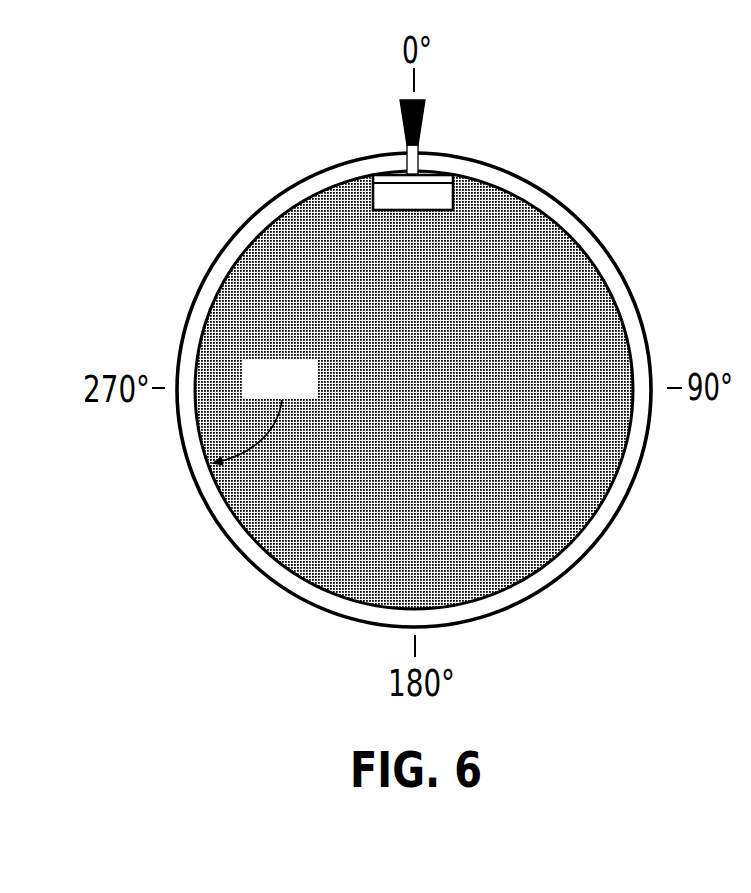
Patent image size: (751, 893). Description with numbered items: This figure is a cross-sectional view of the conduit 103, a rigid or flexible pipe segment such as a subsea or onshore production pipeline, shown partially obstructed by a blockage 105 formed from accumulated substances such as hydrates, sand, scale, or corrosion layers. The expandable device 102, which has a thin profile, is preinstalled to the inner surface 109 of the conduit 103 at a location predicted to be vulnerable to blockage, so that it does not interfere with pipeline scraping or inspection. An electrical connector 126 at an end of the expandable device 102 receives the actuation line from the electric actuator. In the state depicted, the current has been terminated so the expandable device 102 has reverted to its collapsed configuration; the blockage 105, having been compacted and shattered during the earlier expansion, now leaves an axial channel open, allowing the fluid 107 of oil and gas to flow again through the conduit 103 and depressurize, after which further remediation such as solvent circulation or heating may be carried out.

The expandable device 102 is at (437, 180).
The conduit 103 is at (621, 510).
The blockage 105 is at (437, 412).
The fluid 107 is at (393, 203).
The inner surface 109 is at (265, 412).
The electrical connector 126 is at (400, 119).